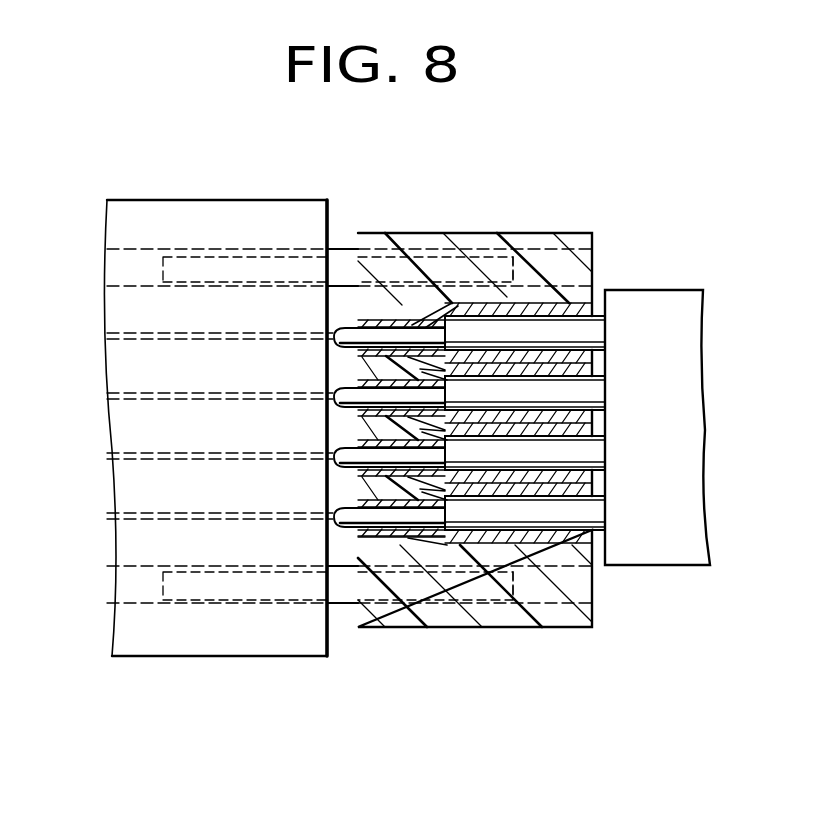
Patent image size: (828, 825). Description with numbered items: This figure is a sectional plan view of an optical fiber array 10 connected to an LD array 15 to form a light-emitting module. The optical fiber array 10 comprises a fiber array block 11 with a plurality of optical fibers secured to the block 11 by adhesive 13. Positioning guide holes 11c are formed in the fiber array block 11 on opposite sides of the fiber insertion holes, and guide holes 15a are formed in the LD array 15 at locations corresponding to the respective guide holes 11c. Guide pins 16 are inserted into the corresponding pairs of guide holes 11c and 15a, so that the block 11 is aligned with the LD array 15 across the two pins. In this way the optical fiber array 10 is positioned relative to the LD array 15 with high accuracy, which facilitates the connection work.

The optical fiber array 10 is at (469, 439).
The fiber array block 11 is at (517, 233).
The positioning guide hole 11c is at (538, 252).
The adhesive 13 is at (458, 308).
The LD array 15 is at (252, 656).
The guide hole 15a is at (126, 252).
The guide pin 16 is at (340, 260).